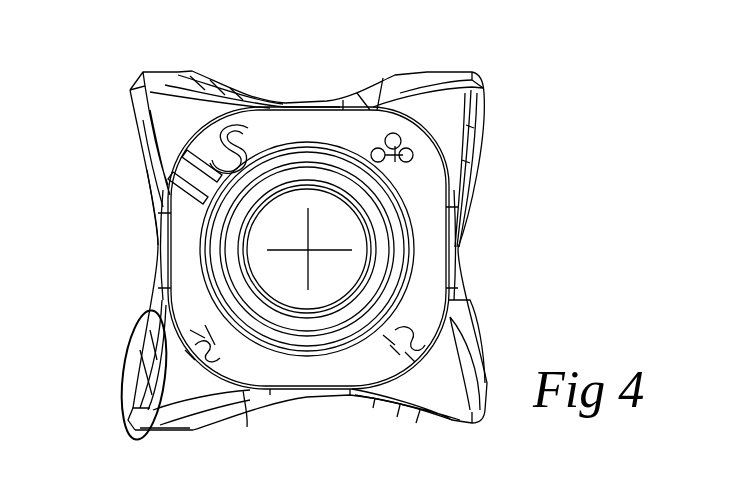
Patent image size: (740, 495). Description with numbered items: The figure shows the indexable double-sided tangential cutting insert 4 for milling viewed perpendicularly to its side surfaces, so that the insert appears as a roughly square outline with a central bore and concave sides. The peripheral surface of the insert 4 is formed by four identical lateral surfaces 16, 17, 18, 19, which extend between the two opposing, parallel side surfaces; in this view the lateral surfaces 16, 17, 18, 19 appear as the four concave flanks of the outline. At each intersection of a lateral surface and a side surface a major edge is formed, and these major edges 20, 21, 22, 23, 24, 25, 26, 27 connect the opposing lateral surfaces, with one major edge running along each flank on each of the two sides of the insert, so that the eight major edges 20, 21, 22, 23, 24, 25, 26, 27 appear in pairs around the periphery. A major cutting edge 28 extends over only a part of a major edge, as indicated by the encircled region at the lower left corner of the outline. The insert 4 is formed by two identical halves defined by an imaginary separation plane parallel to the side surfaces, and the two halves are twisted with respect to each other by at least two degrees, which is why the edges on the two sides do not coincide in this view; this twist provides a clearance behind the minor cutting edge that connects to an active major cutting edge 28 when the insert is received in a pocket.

The cutting insert 4 is at (498, 357).
The lateral surface 16 is at (142, 243).
The lateral surface 17 is at (308, 414).
The lateral surface 18 is at (475, 248).
The lateral surface 19 is at (333, 82).
The major edge 20 is at (170, 172).
The major edge 21 is at (245, 398).
The major edge 22 is at (458, 316).
The major edge 23 is at (382, 82).
The major edge 24 is at (158, 306).
The major edge 25 is at (393, 412).
The major edge 26 is at (470, 175).
The major edge 27 is at (233, 92).
The major cutting edge 28 is at (124, 372).